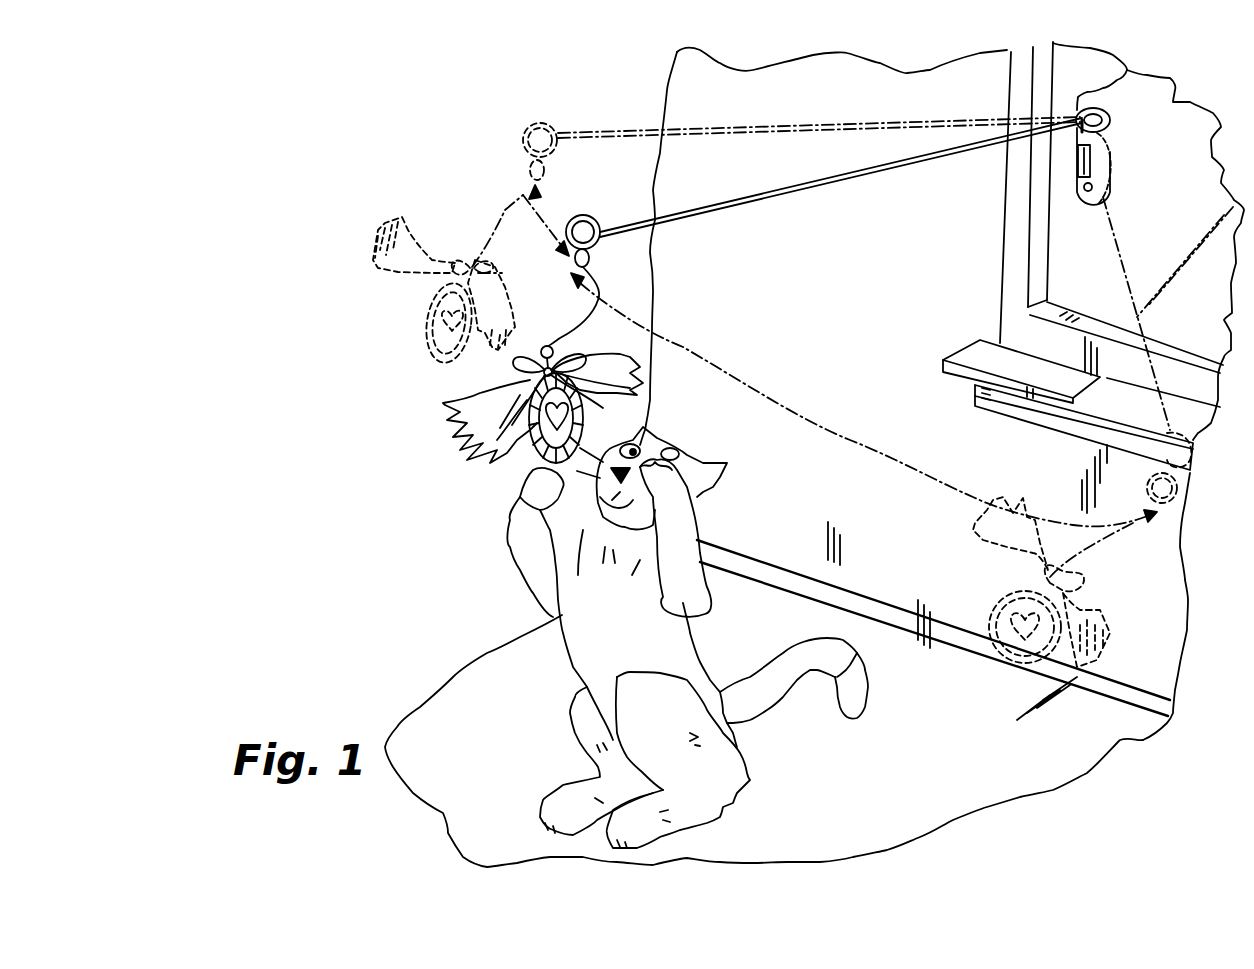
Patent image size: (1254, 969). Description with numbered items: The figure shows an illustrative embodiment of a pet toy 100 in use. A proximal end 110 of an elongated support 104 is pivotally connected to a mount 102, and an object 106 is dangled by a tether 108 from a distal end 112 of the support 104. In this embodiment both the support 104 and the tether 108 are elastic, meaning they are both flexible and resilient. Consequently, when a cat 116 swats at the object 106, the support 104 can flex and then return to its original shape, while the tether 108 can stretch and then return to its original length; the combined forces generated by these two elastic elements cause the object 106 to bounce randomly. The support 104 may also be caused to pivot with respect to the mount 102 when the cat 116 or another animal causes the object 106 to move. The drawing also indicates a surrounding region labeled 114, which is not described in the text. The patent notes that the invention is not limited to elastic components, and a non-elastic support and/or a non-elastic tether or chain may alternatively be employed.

The pet toy 100 is at (848, 117).
The mount 102 is at (1104, 162).
The elongated support 104 is at (772, 196).
The object 106 is at (493, 463).
The tether 108 is at (593, 300).
The proximal end 110 is at (1123, 73).
The distal end 112 is at (574, 230).
The wall 114 is at (1185, 219).
The cat 116 is at (625, 637).